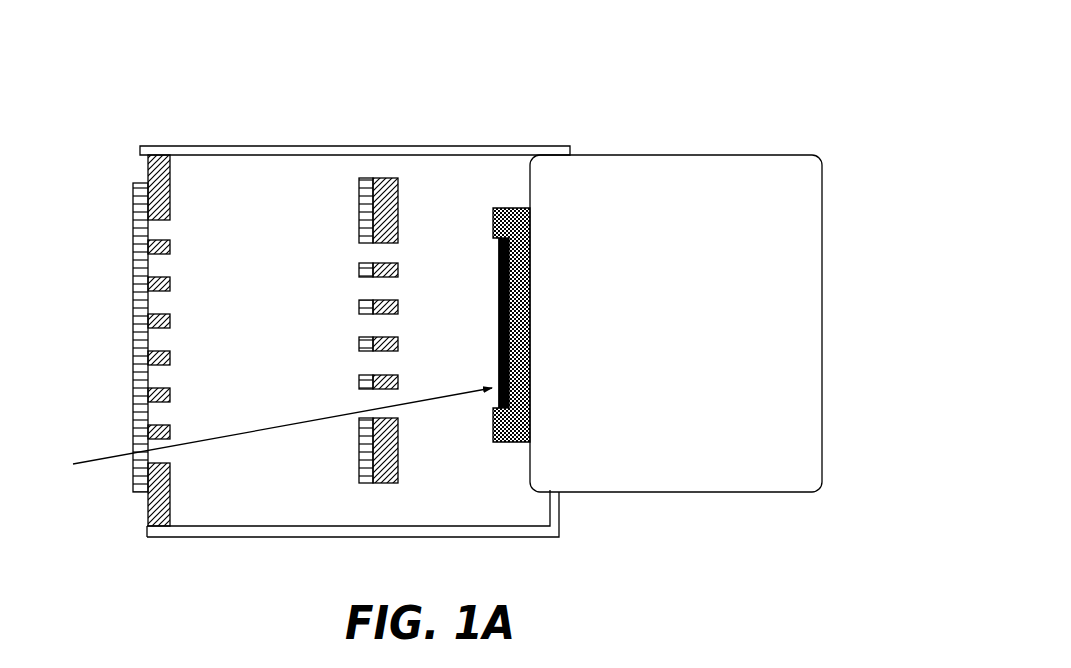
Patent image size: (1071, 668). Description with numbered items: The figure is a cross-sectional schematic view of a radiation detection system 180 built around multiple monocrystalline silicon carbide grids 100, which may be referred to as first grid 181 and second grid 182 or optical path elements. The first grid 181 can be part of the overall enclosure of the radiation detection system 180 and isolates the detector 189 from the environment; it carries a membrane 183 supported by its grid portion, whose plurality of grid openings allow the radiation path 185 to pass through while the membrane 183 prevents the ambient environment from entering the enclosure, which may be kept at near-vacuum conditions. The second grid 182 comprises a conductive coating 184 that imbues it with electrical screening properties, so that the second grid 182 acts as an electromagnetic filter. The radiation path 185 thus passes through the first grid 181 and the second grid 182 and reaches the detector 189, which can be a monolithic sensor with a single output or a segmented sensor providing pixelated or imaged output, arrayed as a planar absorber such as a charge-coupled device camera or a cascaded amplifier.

The grids 100 is at (179, 175).
The radiation detection system 180 is at (689, 72).
The first grid 181 is at (158, 156).
The second grid 182 is at (378, 177).
The membrane 183 is at (142, 181).
The conductive coating 184 is at (371, 177).
The radiation path 185 is at (253, 426).
The detector 189 is at (494, 280).